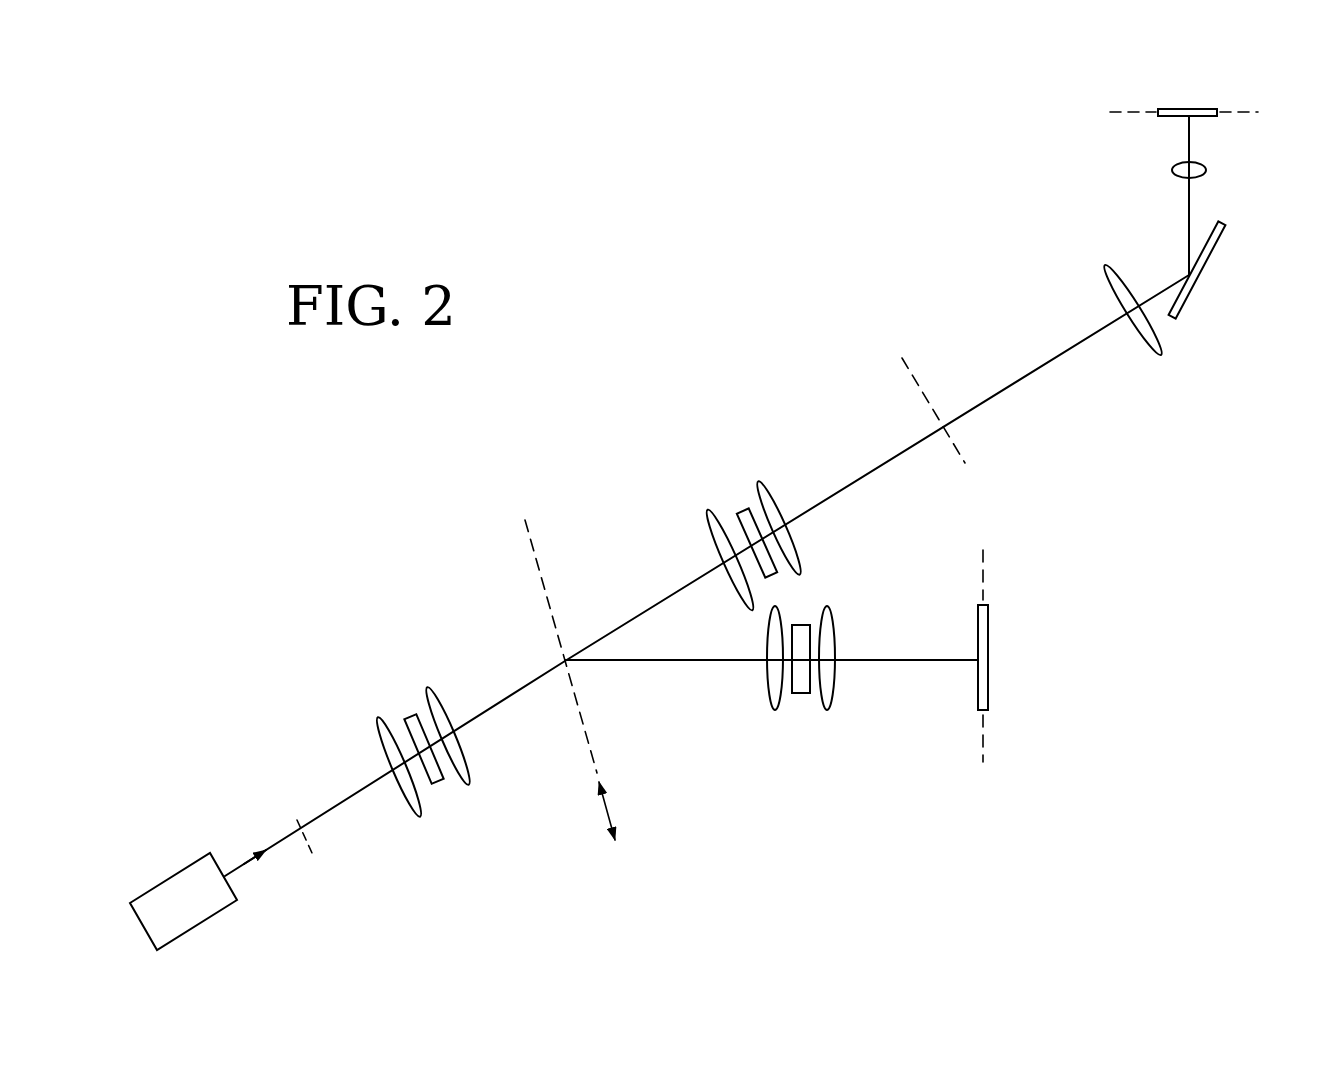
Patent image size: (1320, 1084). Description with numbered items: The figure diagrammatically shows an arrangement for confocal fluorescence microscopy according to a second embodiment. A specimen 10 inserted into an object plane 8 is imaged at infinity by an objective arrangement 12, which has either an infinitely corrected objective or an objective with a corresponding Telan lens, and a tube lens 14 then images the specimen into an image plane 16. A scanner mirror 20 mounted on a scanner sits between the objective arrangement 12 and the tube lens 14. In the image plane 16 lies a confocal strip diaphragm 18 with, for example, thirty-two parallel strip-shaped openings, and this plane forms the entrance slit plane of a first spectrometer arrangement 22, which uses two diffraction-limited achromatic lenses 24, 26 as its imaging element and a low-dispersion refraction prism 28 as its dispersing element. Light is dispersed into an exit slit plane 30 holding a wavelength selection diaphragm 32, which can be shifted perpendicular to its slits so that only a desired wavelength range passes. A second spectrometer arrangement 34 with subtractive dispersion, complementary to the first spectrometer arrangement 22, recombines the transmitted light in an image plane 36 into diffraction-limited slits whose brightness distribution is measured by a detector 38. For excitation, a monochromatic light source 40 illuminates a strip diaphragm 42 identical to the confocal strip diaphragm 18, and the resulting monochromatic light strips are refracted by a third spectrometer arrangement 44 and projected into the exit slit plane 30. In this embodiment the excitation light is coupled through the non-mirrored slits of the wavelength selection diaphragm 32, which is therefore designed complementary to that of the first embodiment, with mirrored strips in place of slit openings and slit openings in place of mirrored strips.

The object plane 8 is at (1169, 113).
The specimen 10 is at (1217, 108).
The objective arrangement 12 is at (1172, 168).
The tube lens 14 is at (1106, 264).
The image plane 16 is at (923, 393).
The confocal strip diaphragm 18 is at (954, 443).
The scanner mirror 20 is at (1197, 277).
The first spectrometer arrangement 22 is at (702, 507).
The achromatic lens 24 is at (758, 482).
The achromatic lens 26 is at (708, 508).
The refraction prism 28 is at (737, 512).
The exit slit plane 30 is at (562, 664).
The wavelength selection diaphragm 32 is at (555, 626).
The second spectrometer arrangement 34 is at (794, 724).
The image plane 36 is at (987, 672).
The detector 38 is at (990, 634).
The monochromatic light source 40 is at (172, 895).
The strip diaphragm 42 is at (296, 819).
The third spectrometer arrangement 44 is at (410, 684).